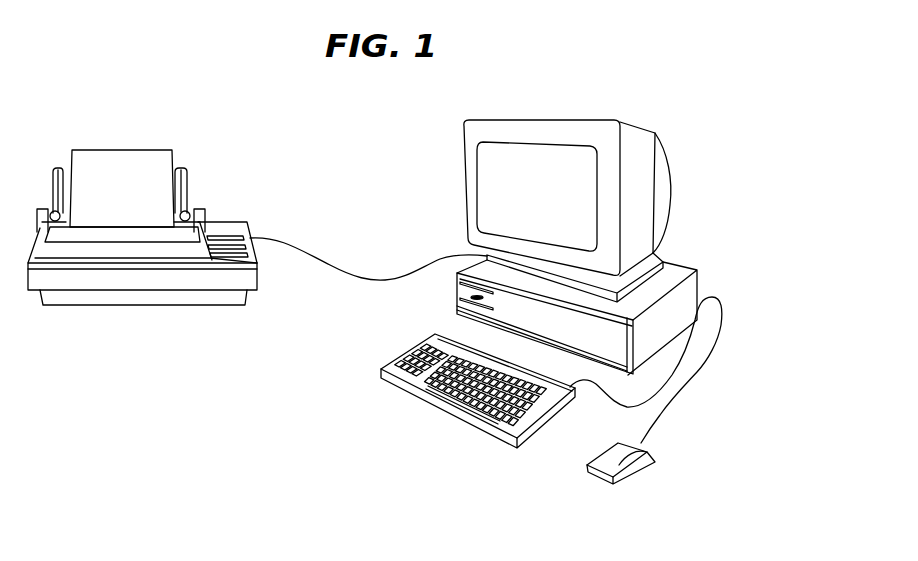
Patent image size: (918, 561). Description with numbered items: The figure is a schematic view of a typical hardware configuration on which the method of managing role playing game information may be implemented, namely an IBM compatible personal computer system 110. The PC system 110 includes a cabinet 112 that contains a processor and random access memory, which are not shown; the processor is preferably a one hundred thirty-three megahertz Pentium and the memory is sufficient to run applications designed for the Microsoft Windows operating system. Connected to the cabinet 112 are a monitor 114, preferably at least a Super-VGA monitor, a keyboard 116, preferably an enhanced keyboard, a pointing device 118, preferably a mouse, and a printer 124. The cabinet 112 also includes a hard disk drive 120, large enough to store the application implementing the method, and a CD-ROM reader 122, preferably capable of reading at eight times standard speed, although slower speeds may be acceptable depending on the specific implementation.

The PC system 110 is at (556, 314).
The cabinet 112 is at (577, 300).
The monitor 114 is at (463, 152).
The keyboard 116 is at (403, 388).
The pointing device 118 is at (634, 478).
The hard disk drive 120 is at (460, 278).
The CD-ROM reader 122 is at (460, 296).
The printer 124 is at (113, 150).